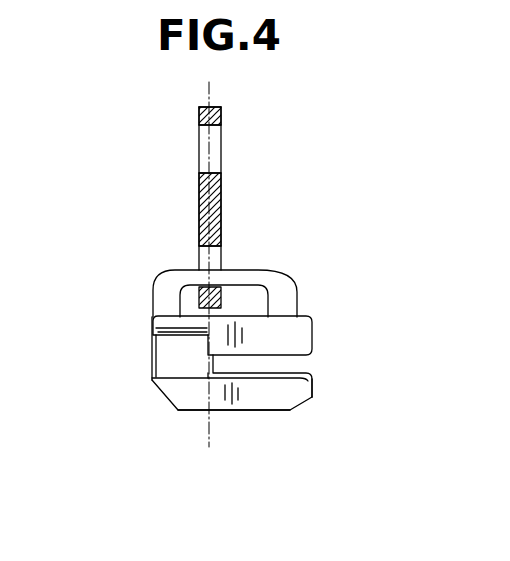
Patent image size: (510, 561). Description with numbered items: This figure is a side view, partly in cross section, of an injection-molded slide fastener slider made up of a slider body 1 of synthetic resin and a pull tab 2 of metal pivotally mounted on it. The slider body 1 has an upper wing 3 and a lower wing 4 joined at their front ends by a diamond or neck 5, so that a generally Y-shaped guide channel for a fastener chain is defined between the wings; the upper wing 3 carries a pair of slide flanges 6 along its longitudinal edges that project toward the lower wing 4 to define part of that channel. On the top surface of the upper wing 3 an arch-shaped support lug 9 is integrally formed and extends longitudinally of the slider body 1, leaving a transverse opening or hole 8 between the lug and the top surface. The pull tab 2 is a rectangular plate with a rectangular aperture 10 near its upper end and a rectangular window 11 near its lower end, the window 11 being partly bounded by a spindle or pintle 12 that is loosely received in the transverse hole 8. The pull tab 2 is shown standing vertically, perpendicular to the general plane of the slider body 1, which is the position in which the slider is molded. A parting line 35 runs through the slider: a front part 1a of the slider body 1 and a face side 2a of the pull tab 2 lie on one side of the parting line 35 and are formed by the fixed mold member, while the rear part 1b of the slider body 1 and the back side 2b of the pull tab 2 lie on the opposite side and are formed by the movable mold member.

The slider body 1 is at (246, 379).
The front part of the slider body 1a is at (181, 409).
The rear part of the slider body 1b is at (315, 402).
The pull tab 2 is at (218, 187).
The face side of the pull tab 2a is at (200, 193).
The back side of the pull tab 2b is at (221, 186).
The upper wing 3 is at (160, 320).
The lower wing 4 is at (162, 390).
The diamond or neck 5 is at (165, 348).
The slide flanges 6 is at (297, 348).
The transverse opening or hole 8 is at (250, 288).
The arch-shaped support lug 9 is at (173, 283).
The rectangular aperture 10 is at (212, 150).
The rectangular window 11 is at (209, 252).
The spindle or pintle 12 is at (219, 300).
The parting line 35 is at (212, 434).